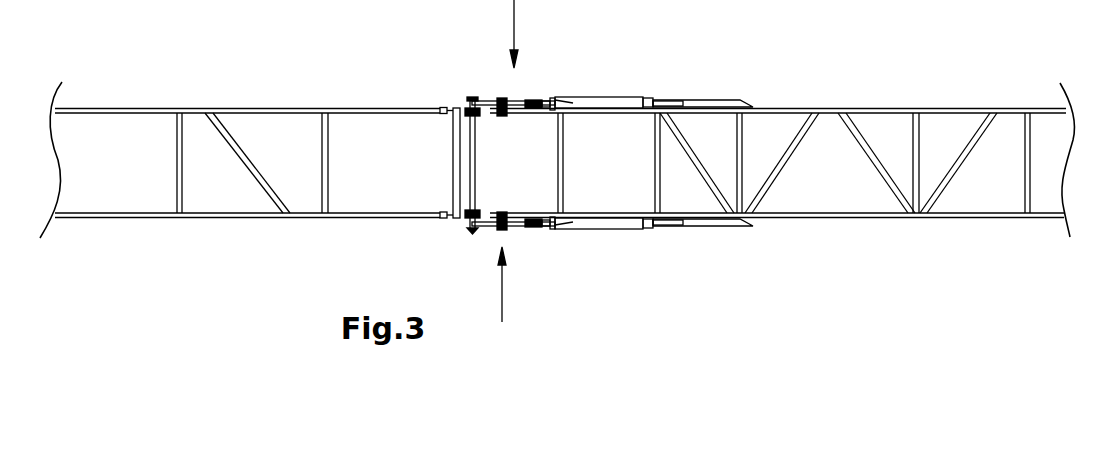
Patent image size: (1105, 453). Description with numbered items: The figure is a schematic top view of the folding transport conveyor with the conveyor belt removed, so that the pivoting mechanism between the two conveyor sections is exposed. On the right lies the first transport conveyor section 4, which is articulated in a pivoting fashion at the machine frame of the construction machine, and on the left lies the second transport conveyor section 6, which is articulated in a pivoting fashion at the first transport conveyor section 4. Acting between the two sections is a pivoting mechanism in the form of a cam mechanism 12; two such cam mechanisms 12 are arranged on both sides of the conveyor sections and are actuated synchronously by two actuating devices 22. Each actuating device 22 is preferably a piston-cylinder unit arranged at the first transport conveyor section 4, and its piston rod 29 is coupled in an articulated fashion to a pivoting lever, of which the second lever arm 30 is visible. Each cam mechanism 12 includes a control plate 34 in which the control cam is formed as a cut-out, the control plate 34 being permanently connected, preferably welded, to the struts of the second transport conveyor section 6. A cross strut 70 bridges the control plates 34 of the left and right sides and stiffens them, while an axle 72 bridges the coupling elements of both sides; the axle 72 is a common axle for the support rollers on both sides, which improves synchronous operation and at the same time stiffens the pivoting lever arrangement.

The first transport conveyor section 4 is at (905, 115).
The second transport conveyor section 6 is at (268, 108).
The cam mechanism 12 is at (501, 175).
The actuating device 22 is at (625, 97).
The piston rod 29 is at (550, 100).
The second lever arm 30 is at (521, 99).
The control plate 34 is at (448, 108).
The cross strut 70 is at (455, 157).
The axle 72 is at (473, 132).